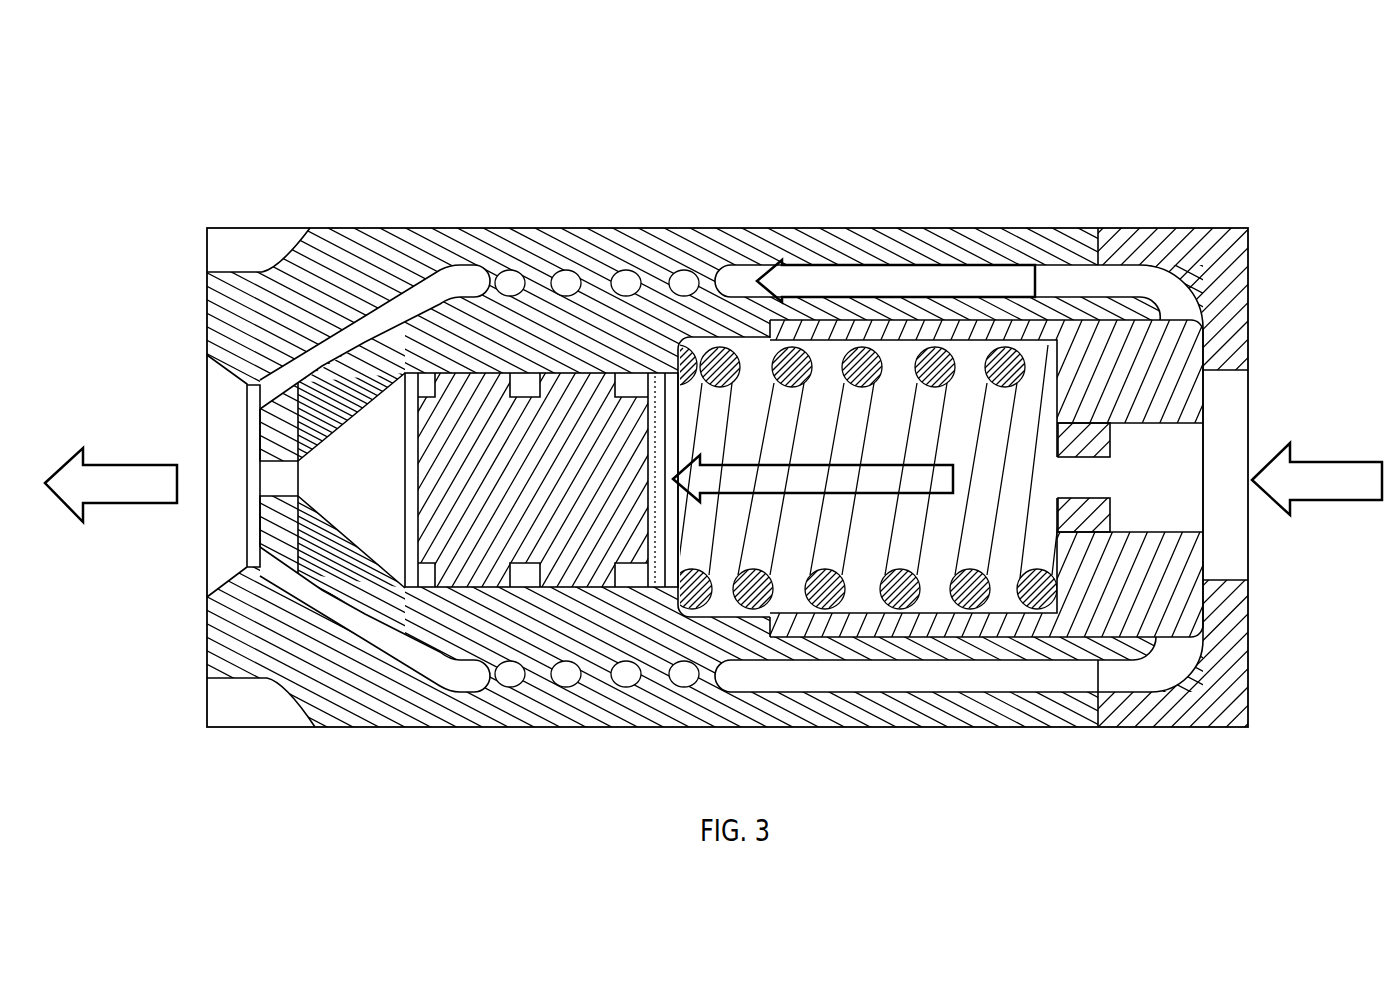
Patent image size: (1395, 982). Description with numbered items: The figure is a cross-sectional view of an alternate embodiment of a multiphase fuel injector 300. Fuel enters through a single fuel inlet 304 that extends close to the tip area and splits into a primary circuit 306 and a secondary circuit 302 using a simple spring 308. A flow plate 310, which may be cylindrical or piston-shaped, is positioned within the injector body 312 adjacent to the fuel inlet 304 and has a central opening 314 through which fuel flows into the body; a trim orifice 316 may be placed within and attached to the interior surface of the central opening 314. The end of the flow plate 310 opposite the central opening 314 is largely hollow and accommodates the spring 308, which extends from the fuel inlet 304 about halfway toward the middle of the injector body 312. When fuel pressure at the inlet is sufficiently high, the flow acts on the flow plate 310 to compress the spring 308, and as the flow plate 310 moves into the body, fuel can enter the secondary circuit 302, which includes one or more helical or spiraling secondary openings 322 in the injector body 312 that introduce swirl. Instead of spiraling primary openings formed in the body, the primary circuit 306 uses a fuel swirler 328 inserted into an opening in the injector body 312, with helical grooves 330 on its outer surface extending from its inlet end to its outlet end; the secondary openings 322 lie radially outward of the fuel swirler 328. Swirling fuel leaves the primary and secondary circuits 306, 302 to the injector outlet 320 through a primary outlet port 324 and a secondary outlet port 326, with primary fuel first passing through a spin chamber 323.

The multiphase fuel injector 300 is at (958, 123).
The secondary circuit 302 is at (890, 265).
The fuel inlet 304 is at (1333, 500).
The primary circuit 306 is at (748, 337).
The spring 308 is at (828, 600).
The flow plate 310 is at (1173, 612).
The injector body 312 is at (628, 228).
The central opening 314 is at (1178, 462).
The trim orifice 316 is at (1097, 520).
The injector outlet 320 is at (123, 503).
The spiraling secondary openings 322 is at (568, 688).
The spin chamber 323 is at (362, 408).
The primary outlet port 324 is at (287, 500).
The secondary outlet port 326 is at (290, 590).
The fuel swirler 328 is at (585, 380).
The helical grooves 330 is at (523, 372).